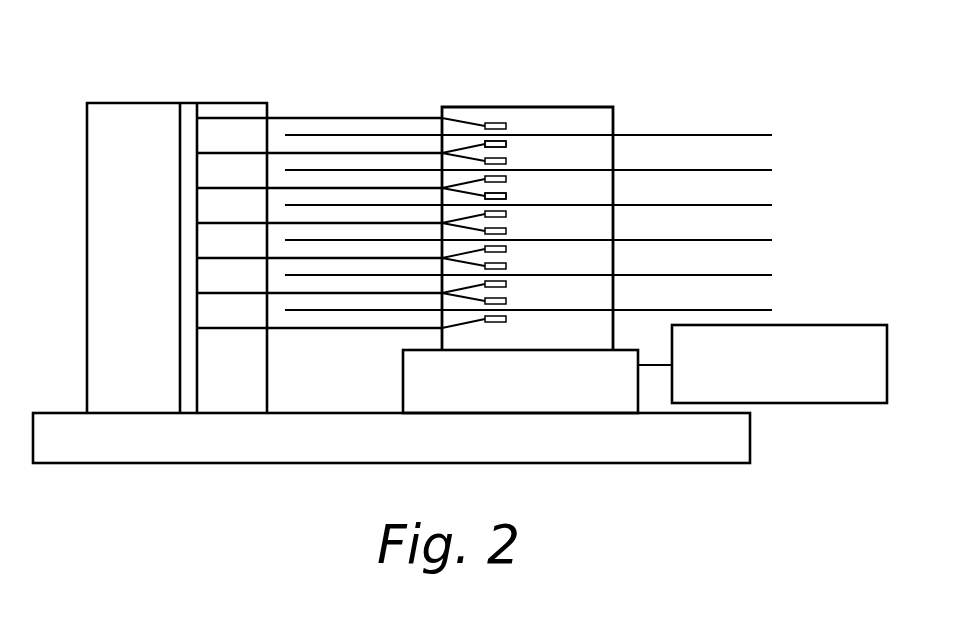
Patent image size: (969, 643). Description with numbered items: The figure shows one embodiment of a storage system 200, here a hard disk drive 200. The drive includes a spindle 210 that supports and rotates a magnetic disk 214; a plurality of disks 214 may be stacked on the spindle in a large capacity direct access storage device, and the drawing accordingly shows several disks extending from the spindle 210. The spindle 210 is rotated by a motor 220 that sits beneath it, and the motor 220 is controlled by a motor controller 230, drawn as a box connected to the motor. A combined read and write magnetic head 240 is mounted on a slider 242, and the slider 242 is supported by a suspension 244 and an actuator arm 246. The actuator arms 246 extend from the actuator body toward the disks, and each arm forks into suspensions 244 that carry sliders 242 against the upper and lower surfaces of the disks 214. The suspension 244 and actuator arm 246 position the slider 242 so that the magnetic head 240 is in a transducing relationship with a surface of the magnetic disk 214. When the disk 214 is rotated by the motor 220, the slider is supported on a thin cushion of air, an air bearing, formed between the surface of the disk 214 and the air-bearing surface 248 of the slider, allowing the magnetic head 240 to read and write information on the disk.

The storage system 200 is at (742, 60).
The spindle 210 is at (592, 104).
The magnetic disk 214 is at (772, 135).
The motor 220 is at (592, 397).
The motor controller 230 is at (852, 407).
The magnetic head 240 is at (507, 146).
The slider 242 is at (506, 145).
The suspension 244 is at (463, 153).
The actuator arm 246 is at (367, 150).
The air-bearing surface 248 is at (507, 202).